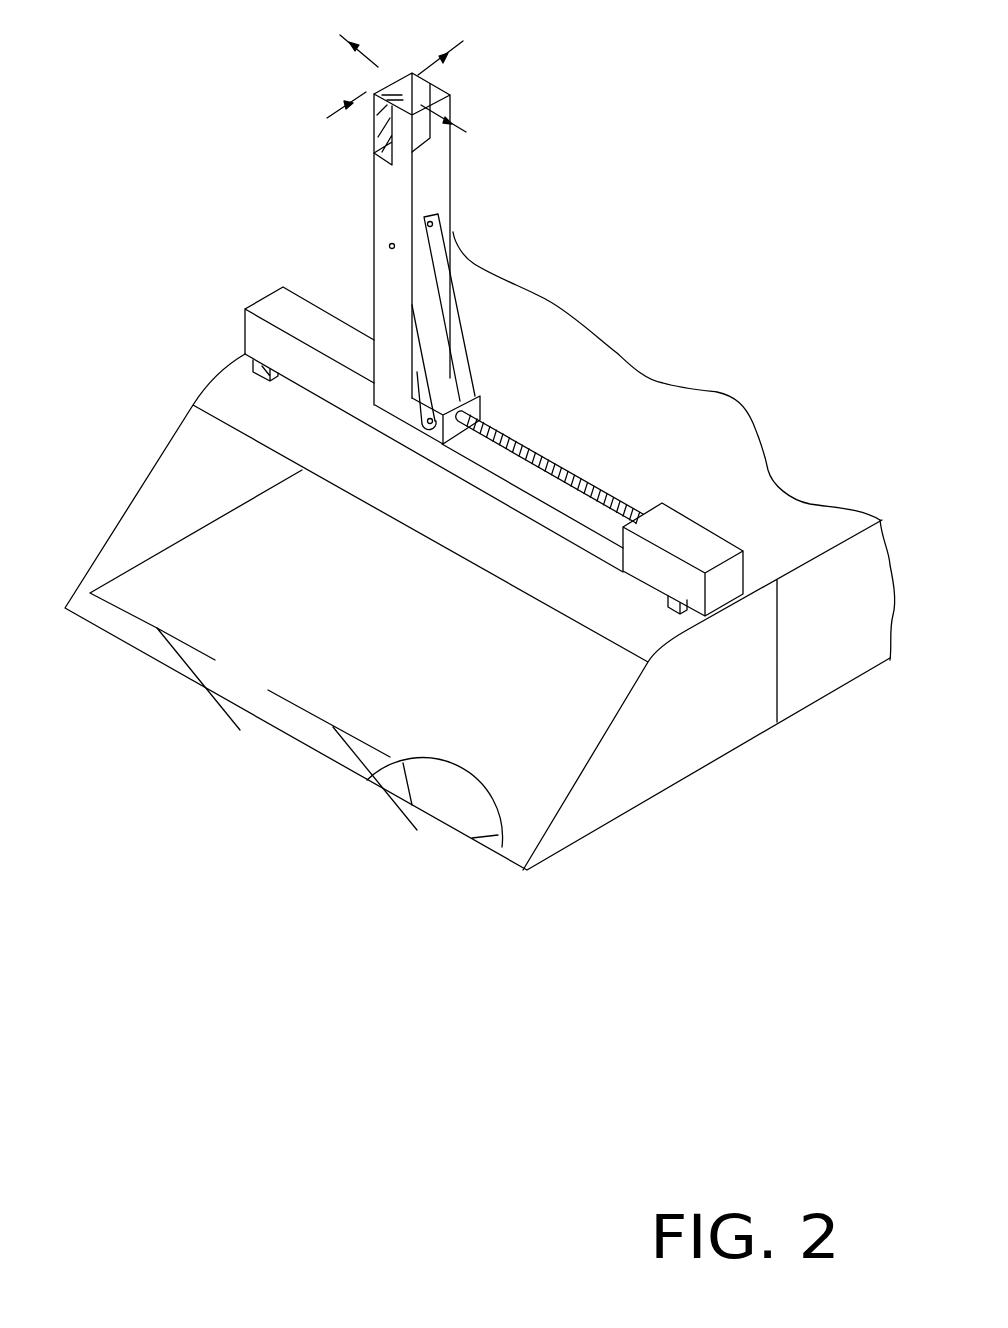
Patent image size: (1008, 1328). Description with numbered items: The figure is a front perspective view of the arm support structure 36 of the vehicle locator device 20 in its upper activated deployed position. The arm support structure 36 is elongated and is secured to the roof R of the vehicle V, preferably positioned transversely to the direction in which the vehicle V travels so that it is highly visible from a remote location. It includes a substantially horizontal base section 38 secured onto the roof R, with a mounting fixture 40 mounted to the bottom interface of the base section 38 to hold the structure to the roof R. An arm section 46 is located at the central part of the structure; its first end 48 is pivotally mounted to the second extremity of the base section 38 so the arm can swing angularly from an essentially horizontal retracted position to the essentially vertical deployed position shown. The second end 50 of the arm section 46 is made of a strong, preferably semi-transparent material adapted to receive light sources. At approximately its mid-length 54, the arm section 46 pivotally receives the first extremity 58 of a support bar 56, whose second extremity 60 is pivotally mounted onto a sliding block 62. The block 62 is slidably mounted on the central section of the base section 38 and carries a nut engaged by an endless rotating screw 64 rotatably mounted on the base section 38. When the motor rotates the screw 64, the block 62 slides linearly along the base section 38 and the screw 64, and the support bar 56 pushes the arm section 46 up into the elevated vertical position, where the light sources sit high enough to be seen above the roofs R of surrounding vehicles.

The vehicle locator device 20 is at (173, 149).
The arm support structure 36 is at (587, 548).
The base section 38 is at (282, 312).
The mounting fixture 40 is at (255, 372).
The arm section 46 is at (452, 163).
The first end 48 is at (398, 380).
The second end 50 is at (372, 134).
The mid-length 54 is at (389, 246).
The support bar 56 is at (413, 345).
The first extremity 58 is at (438, 215).
The second extremity 60 is at (431, 425).
The sliding block 62 is at (483, 405).
The endless rotating screw 64 is at (543, 469).
The roof R is at (648, 387).
The vehicle V is at (620, 813).